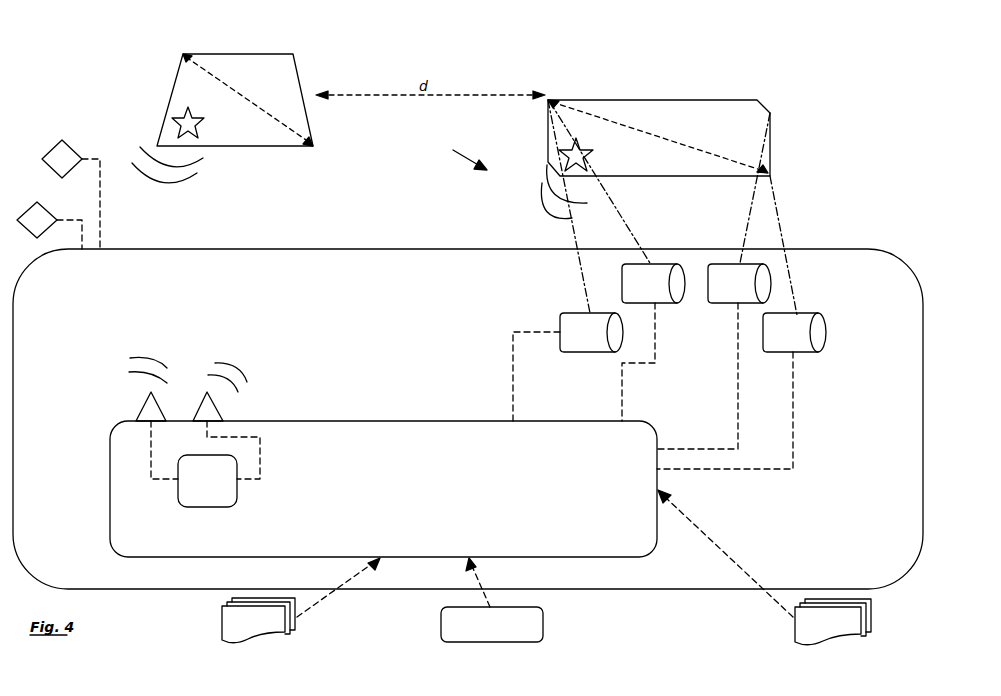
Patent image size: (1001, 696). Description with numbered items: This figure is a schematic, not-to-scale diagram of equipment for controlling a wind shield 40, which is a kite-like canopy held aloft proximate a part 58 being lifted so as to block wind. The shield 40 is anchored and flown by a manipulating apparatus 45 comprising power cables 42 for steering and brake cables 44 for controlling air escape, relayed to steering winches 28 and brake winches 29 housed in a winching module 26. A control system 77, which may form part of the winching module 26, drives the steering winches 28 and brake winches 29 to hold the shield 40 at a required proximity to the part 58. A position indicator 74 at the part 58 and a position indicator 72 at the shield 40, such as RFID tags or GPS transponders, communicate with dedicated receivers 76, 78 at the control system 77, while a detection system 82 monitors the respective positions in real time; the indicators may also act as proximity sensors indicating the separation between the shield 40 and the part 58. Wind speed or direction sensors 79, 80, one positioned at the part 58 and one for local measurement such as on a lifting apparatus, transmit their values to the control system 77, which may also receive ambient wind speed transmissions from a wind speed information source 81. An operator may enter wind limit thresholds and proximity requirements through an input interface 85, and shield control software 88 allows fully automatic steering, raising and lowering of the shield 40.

The winching module 26 is at (47, 453).
The steering winch 28 is at (670, 292).
The brake winch 29 is at (608, 335).
The shield 40 is at (731, 140).
The power cable 42 is at (753, 202).
The brake cable 44 is at (780, 233).
The manipulating apparatus 45 is at (464, 149).
The part being lifted 58 is at (277, 90).
The position indicator 72 is at (578, 143).
The position indicator 74 is at (178, 122).
The receiver 76 is at (215, 412).
The control system 77 is at (132, 531).
The receiver 78 is at (123, 396).
The wind speed sensor 79 is at (37, 217).
The wind speed sensor 80 is at (55, 158).
The wind speed information source 81 is at (241, 630).
The detection system 82 is at (198, 486).
The input interface 85 is at (511, 638).
The shield control software 88 is at (816, 633).